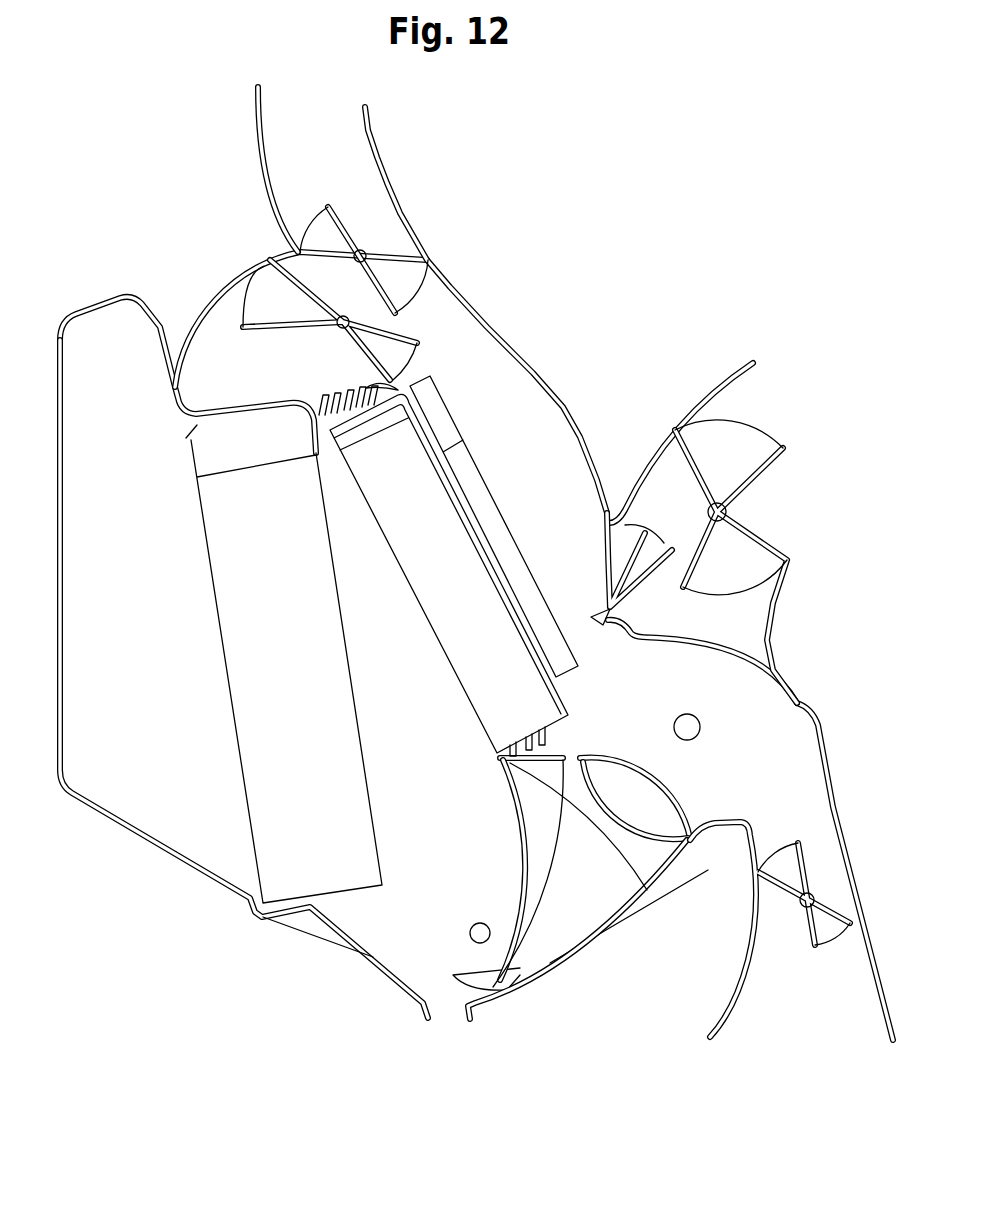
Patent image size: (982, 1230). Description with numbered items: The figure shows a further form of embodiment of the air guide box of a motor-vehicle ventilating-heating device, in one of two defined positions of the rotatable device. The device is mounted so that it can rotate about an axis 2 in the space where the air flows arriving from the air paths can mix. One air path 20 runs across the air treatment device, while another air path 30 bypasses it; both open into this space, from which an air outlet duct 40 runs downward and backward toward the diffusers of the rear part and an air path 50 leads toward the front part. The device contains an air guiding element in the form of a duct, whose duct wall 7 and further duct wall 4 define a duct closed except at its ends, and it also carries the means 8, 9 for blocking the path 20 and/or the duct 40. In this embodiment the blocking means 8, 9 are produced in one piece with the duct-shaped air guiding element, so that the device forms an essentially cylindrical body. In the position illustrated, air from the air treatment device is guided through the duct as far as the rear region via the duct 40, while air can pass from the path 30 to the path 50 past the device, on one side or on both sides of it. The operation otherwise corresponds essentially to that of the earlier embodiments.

The axis 2 is at (687, 727).
The duct wall 4 is at (672, 640).
The duct wall 7 is at (668, 797).
The blocking means 8 is at (702, 661).
The blocking means 9 is at (603, 790).
The air path 20 is at (588, 631).
The air path 30 is at (612, 887).
The air outlet duct 40 is at (825, 834).
The air path 50 is at (739, 644).